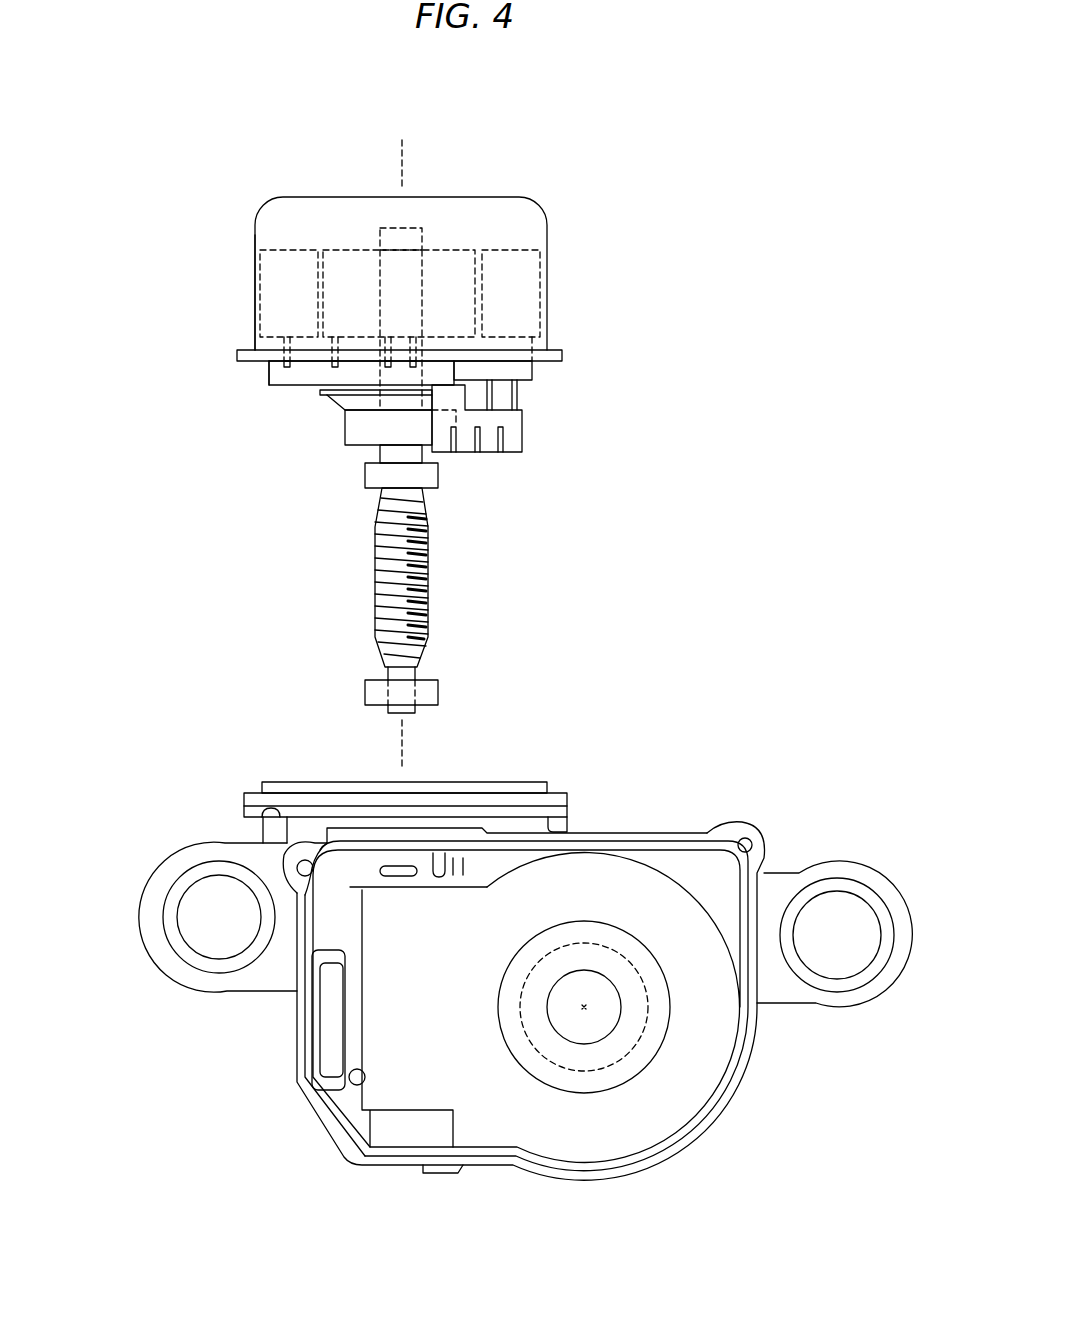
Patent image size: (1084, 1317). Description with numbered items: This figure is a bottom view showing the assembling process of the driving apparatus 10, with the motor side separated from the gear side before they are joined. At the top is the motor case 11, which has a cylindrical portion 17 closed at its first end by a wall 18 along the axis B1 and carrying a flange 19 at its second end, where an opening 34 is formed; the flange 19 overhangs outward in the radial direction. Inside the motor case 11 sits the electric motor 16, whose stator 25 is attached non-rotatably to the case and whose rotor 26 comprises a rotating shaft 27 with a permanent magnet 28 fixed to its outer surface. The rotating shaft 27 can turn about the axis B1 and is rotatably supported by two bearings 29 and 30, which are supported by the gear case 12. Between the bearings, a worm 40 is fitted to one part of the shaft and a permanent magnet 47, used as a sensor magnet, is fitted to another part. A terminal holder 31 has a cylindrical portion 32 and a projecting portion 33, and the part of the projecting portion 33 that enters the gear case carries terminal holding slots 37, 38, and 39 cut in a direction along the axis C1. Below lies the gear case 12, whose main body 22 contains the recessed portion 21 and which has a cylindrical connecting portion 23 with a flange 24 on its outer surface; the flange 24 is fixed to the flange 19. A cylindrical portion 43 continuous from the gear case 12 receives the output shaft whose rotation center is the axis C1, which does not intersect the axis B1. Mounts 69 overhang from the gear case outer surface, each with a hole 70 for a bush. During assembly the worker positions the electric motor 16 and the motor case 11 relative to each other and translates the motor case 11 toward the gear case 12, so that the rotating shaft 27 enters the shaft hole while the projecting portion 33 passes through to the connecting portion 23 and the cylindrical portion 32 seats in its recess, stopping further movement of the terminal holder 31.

The driving apparatus 10 is at (740, 423).
The motor case 11 is at (567, 279).
The gear case 12 is at (280, 1058).
The electric motor 16 is at (327, 226).
The cylindrical portion 17 is at (257, 275).
The wall 18 is at (490, 196).
The flange 19 is at (548, 361).
The recessed portion 21 is at (523, 1133).
The main body 22 is at (730, 1102).
The connecting portion 23 is at (280, 830).
The flange 24 is at (548, 782).
The stator 25 is at (277, 262).
The rotor 26 is at (360, 232).
The rotating shaft 27 is at (404, 628).
The permanent magnet 28 is at (442, 270).
The bearing 29 is at (352, 432).
The bearing 30 is at (362, 693).
The terminal holder 31 is at (267, 407).
The cylindrical portion 32 is at (300, 375).
The projecting portion 33 is at (540, 454).
The opening 34 is at (248, 378).
The terminal holding slot 37 is at (452, 453).
The terminal holding slot 38 is at (478, 453).
The terminal holding slot 39 is at (502, 453).
The worm 40 is at (375, 600).
The cylindrical portion 43 is at (585, 943).
The permanent magnet 47 is at (368, 478).
The mount 69 is at (168, 960).
The hole 70 is at (190, 906).
The axis B1 is at (400, 150).
The axis C1 is at (583, 1008).